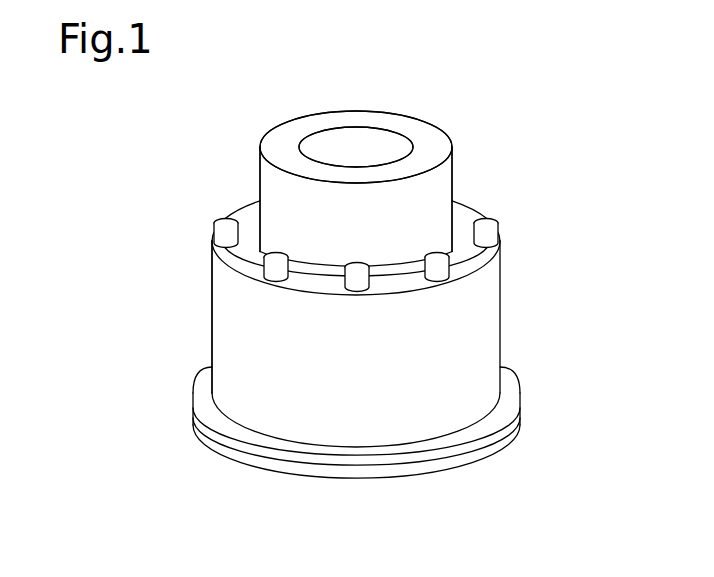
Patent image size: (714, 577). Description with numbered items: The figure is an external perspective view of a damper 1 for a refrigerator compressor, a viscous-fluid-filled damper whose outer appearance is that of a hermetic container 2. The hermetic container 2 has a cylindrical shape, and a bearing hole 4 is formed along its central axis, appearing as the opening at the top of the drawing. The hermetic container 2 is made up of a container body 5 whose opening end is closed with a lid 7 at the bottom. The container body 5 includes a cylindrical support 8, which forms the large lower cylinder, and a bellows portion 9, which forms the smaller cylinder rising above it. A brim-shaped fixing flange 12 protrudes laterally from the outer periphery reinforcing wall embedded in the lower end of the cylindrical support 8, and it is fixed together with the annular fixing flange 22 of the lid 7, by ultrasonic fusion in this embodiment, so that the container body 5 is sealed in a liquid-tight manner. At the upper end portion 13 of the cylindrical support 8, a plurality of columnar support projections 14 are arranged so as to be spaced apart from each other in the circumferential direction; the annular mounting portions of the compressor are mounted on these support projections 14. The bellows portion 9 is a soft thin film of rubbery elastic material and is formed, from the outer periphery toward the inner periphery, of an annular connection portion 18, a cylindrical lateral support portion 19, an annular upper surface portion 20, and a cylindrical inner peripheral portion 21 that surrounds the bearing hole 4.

The damper 1 is at (494, 134).
The hermetic container 2 is at (403, 113).
The bearing hole 4 is at (357, 140).
The container body 5 is at (502, 302).
The lid 7 is at (193, 423).
The cylindrical support 8 is at (212, 337).
The bellows portion 9 is at (260, 165).
The fixing flange 12 is at (500, 373).
The upper end portion 13 is at (312, 278).
The support projections 14 is at (214, 250).
The annular connection portion 18 is at (258, 235).
The cylindrical lateral support portion 19 is at (452, 180).
The annular upper surface portion 20 is at (283, 133).
The cylindrical inner peripheral portion 21 is at (328, 140).
The fixing flange 22 is at (520, 420).